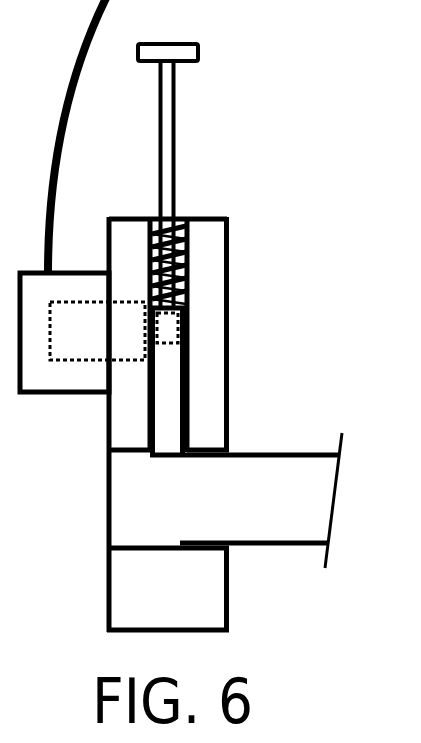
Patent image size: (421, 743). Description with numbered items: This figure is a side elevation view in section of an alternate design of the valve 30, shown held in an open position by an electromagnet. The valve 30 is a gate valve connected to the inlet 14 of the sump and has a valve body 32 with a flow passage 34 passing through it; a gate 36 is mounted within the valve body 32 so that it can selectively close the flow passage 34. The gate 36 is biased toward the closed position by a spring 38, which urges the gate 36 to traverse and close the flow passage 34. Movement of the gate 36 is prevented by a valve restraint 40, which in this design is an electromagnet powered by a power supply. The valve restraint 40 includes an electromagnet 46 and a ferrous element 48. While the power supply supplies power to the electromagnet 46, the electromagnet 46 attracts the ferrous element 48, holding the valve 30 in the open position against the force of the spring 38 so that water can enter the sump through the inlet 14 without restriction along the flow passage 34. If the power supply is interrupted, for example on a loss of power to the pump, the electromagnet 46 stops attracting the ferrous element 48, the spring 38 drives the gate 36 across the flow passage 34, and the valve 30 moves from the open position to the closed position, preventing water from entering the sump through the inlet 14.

The inlet 14 is at (275, 527).
The valve 30 is at (160, 575).
The valve body 32 is at (212, 283).
The flow passage 34 is at (143, 480).
The gate 36 is at (168, 407).
The spring 38 is at (185, 290).
The valve restraint 40 is at (40, 375).
The electromagnet 46 is at (86, 350).
The ferrous element 48 is at (183, 342).